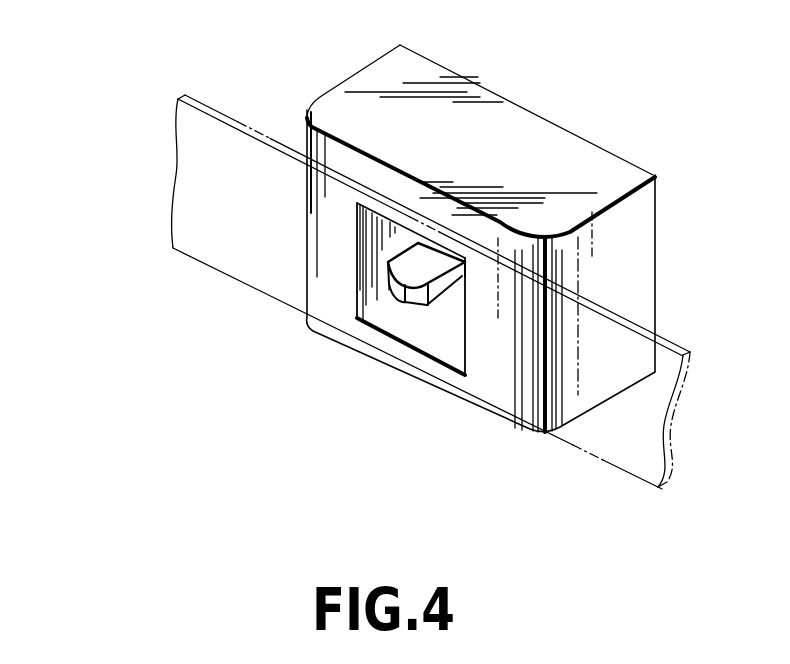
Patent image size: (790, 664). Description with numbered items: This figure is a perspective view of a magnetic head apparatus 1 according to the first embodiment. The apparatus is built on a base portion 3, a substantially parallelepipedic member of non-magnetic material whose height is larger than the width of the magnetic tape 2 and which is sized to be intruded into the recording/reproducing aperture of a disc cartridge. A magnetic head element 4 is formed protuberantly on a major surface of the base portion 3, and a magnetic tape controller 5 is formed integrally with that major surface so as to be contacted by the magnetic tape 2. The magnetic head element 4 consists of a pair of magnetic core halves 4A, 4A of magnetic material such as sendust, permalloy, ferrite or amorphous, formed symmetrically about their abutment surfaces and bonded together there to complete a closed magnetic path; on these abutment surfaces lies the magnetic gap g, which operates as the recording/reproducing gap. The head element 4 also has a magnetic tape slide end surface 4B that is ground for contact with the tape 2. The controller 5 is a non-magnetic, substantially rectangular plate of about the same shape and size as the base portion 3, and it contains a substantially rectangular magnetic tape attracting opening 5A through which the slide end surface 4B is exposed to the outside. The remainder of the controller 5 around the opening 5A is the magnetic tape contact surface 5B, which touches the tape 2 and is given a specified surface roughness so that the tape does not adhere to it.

The magnetic head apparatus 1 is at (242, 57).
The magnetic tape 2 is at (187, 202).
The base portion 3 is at (597, 172).
The magnetic head element 4 is at (395, 451).
The magnetic core half 4A is at (388, 262).
The magnetic tape slide end surface 4B is at (415, 295).
The magnetic gap g is at (392, 296).
The magnetic tape controller 5 is at (328, 258).
The magnetic tape attracting opening 5A is at (464, 345).
The magnetic tape contact surface 5B is at (498, 312).